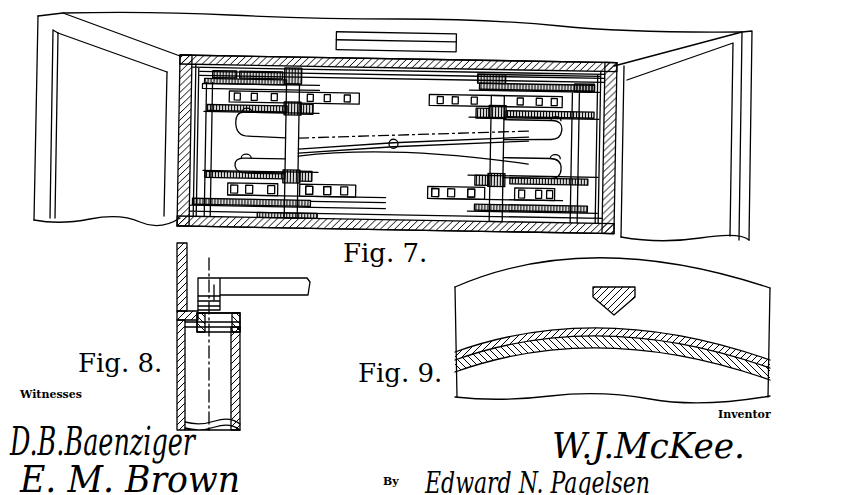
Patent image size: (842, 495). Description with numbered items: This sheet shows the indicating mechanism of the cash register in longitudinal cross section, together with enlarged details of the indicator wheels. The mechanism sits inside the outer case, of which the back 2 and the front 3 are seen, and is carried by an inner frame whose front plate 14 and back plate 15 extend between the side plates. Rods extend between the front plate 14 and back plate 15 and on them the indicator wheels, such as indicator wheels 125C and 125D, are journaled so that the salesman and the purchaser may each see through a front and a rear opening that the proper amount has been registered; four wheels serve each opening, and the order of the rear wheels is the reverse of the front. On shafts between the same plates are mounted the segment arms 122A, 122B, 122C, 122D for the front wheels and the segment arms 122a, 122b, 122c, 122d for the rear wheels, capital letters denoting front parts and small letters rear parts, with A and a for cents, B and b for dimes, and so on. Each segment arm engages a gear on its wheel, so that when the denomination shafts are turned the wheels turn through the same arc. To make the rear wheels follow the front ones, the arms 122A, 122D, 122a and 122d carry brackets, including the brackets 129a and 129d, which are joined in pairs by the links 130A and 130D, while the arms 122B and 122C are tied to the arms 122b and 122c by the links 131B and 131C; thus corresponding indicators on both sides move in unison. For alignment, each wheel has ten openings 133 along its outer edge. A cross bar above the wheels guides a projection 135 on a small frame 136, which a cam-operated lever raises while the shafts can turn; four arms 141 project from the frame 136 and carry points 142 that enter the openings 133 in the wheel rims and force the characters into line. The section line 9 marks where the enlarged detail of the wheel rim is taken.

In FIG. 7, the back 2 is at (471, 224).
In FIG. 7, the front 3 is at (397, 131).
In FIG. 8, the section line 9 is at (208, 347).
In FIG. 7, the front plate 14 is at (210, 56).
In FIG. 7, the back plate 15 is at (331, 226).
In FIG. 7, the segment arm 122A is at (207, 83).
In FIG. 7, the segment arm 122B is at (210, 107).
In FIG. 7, the segment arm 122C is at (594, 110).
In FIG. 7, the segment arm 122D is at (594, 82).
In FIG. 7, the segment arm 122a is at (594, 205).
In FIG. 7, the segment arm 122b is at (594, 176).
In FIG. 7, the segment arm 122c is at (207, 175).
In FIG. 7, the segment arm 122d is at (200, 205).
In FIG. 8, the indicator wheel 125C is at (179, 283).
In FIG. 8, the indicator wheel 125D is at (178, 333).
In FIG. 7, the bracket 129a is at (576, 141).
In FIG. 7, the bracket 129d is at (213, 144).
In FIG. 7, the link 130A is at (453, 80).
In FIG. 7, the link 130D is at (333, 72).
In FIG. 7, the link 131B is at (556, 162).
In FIG. 7, the link 131C is at (251, 160).
In FIG. 7, the openings 133 is at (343, 187).
In FIG. 8, the openings 133 is at (218, 312).
In FIG. 9, the openings 133 is at (508, 350).
In FIG. 7, the projection 135 is at (395, 144).
In FIG. 7, the small frame 136 is at (395, 135).
In FIG. 7, the arms 141 is at (303, 166).
In FIG. 8, the points 142 is at (215, 293).
In FIG. 9, the points 142 is at (593, 302).